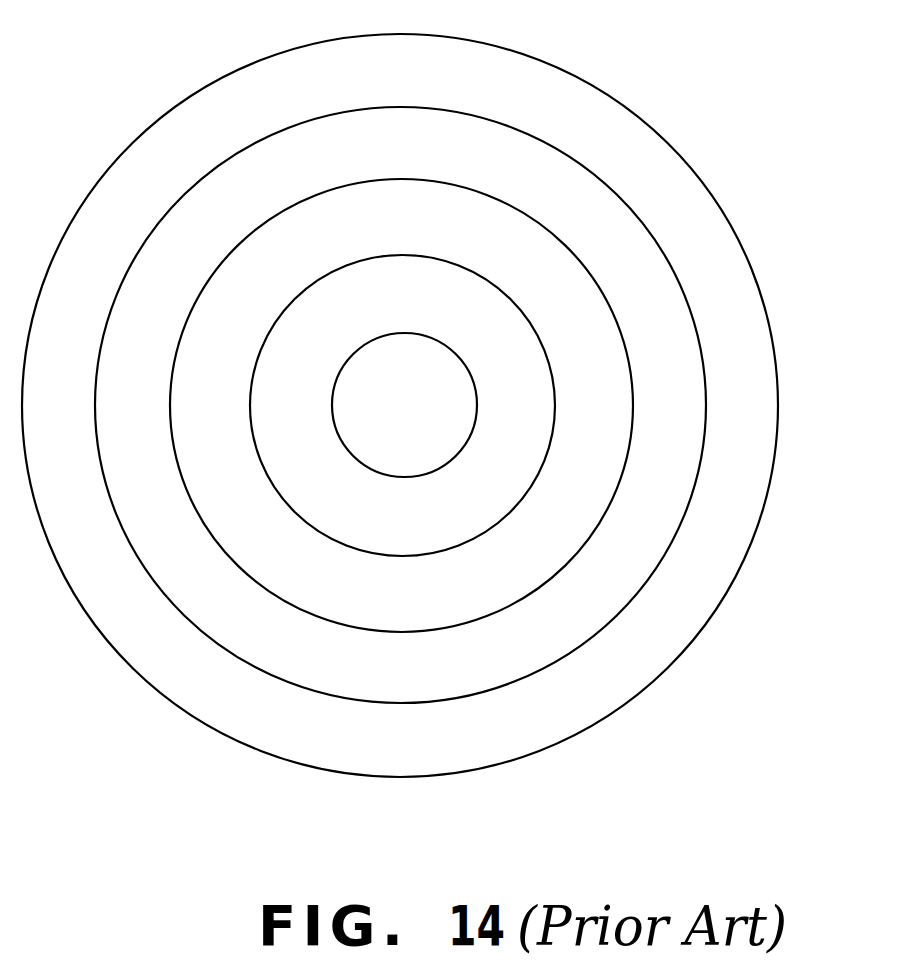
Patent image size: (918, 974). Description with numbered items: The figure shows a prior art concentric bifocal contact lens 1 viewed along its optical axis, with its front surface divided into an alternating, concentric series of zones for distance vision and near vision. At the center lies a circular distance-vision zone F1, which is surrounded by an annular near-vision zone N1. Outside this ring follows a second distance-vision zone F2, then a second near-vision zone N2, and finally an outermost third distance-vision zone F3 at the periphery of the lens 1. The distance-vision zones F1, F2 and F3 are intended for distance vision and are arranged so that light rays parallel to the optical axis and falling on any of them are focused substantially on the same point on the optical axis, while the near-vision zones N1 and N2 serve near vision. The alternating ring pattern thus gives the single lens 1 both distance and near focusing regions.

The contact lens 1 is at (412, 405).
The distance-vision zone F1 is at (404, 405).
The near-vision zone N1 is at (402, 405).
The distance-vision zone F2 is at (401, 405).
The near-vision zone N2 is at (400, 405).
The distance-vision zone F3 is at (400, 405).